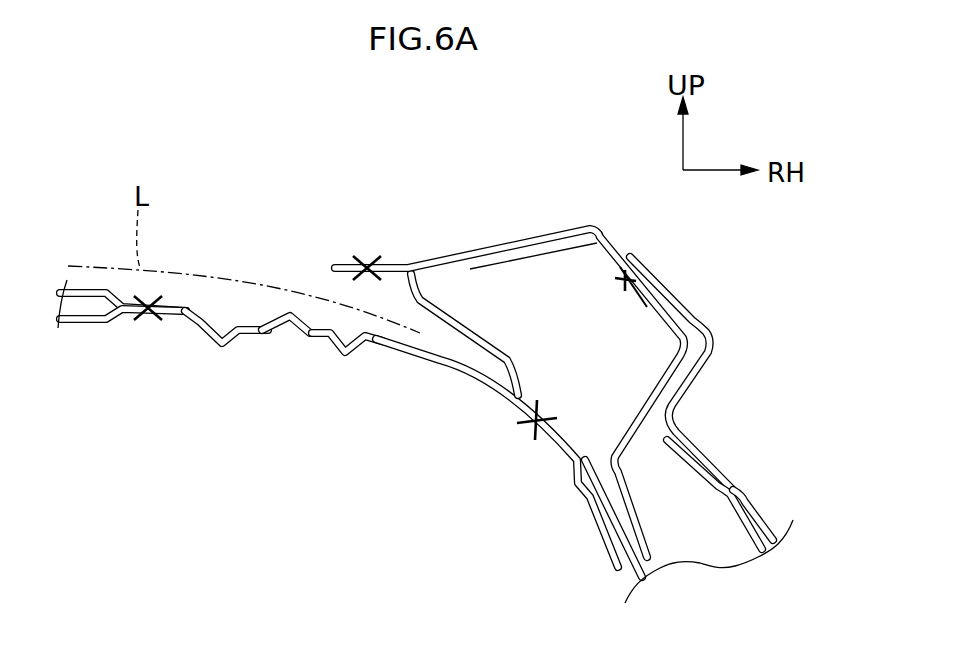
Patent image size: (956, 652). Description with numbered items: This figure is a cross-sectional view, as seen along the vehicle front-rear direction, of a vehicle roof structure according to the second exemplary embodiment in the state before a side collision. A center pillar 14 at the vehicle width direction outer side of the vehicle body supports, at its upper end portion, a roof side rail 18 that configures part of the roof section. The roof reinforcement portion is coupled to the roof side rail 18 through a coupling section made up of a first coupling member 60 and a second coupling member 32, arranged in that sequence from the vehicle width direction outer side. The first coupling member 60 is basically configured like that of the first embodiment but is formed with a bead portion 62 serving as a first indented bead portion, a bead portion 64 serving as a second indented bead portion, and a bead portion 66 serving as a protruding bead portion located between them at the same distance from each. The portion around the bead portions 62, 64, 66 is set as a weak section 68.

The center pillar 14 is at (740, 490).
The roof side rail 18 is at (600, 238).
The second coupling member 32 is at (95, 291).
The first coupling member 60 is at (370, 380).
The bead portion 62 is at (217, 337).
The bead portion 64 is at (356, 346).
The bead portion 66 is at (292, 316).
The weak section 68 is at (313, 212).